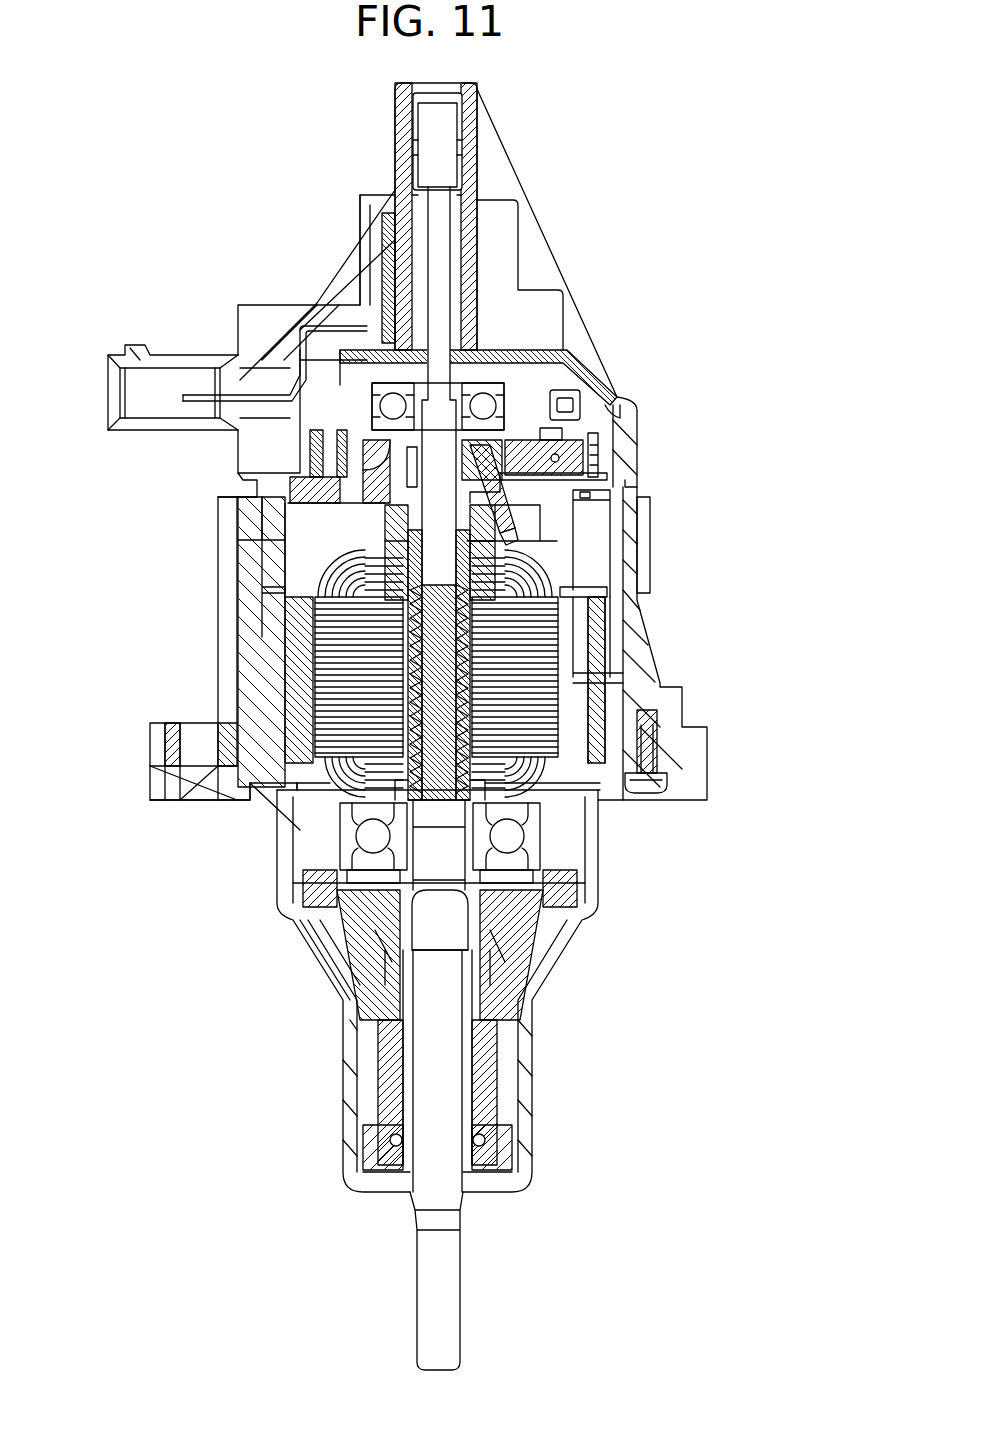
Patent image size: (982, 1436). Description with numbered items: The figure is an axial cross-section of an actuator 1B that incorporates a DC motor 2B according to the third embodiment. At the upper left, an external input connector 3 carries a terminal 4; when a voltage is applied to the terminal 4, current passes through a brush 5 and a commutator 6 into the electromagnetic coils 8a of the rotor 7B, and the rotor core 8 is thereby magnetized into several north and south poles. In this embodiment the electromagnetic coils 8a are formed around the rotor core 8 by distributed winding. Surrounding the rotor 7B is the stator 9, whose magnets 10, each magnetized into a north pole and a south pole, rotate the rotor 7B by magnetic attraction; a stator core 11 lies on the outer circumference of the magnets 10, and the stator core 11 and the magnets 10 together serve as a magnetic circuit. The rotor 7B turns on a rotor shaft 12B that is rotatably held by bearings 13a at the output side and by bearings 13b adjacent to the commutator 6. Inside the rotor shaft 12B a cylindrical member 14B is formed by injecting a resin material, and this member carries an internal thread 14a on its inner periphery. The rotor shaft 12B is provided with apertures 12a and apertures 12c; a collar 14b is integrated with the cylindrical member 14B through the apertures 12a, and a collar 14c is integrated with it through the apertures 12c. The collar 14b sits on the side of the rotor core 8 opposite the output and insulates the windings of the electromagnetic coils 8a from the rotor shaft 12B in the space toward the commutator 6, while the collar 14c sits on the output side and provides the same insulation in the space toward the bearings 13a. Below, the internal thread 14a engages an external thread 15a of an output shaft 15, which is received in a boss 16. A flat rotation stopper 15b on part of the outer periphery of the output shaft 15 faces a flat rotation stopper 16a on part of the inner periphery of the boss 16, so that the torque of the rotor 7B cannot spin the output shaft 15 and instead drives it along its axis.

The actuator 1B is at (707, 340).
The DC motor 2B is at (652, 605).
The external input connector 3 is at (122, 355).
The terminal 4 is at (185, 392).
The brush 5 is at (563, 442).
The commutator 6 is at (495, 450).
The rotor 7B is at (565, 690).
The rotor core 8 is at (657, 745).
The electromagnetic coils 8a is at (665, 790).
The stator 9 is at (278, 650).
The magnets 10 is at (297, 660).
The stator core 11 is at (595, 645).
The apertures 12a is at (515, 520).
The rotor shaft 12B is at (545, 880).
The apertures 12c is at (518, 837).
The bearings 13a is at (545, 860).
The bearings 13b is at (485, 385).
The cylindrical member 14B is at (407, 543).
The internal thread 14a is at (440, 657).
The collar 14b is at (480, 540).
The collar 14c is at (520, 793).
The output shaft 15 is at (422, 1040).
The external thread 15a is at (300, 785).
The rotation stopper 15b is at (340, 958).
The boss 16 is at (497, 990).
The rotation stopper 16a is at (475, 953).